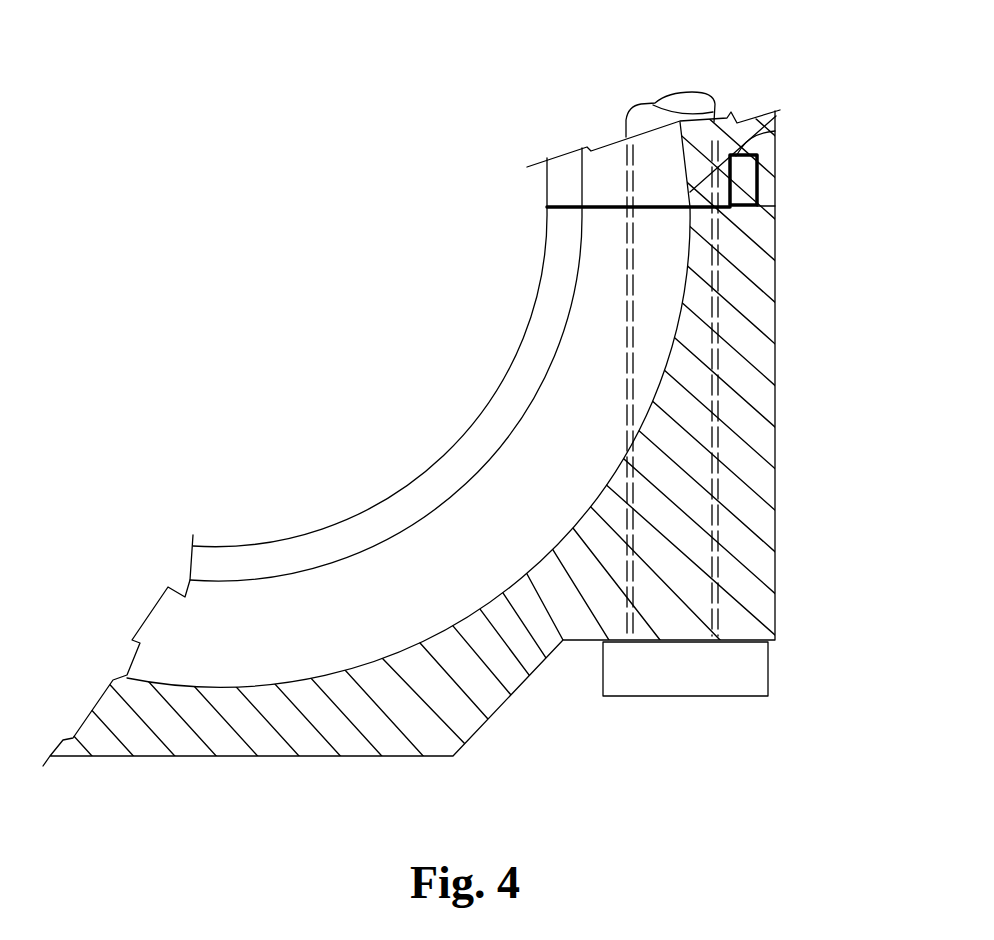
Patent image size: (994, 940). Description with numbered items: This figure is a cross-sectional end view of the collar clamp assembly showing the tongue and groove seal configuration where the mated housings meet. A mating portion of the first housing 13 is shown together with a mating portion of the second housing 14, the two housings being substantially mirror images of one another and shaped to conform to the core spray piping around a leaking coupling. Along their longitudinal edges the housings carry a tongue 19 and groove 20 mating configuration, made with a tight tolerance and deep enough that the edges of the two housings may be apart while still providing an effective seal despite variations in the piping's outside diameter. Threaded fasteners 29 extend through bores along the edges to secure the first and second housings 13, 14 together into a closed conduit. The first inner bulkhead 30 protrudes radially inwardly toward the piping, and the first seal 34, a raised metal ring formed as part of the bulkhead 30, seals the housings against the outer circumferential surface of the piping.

The first housing 13 is at (750, 400).
The second housing 14 is at (687, 160).
The tongue 19 is at (743, 183).
The groove 20 is at (775, 131).
The threaded fasteners 29 is at (657, 117).
The first inner bulkhead 30 is at (535, 450).
The first seal 34 is at (553, 273).